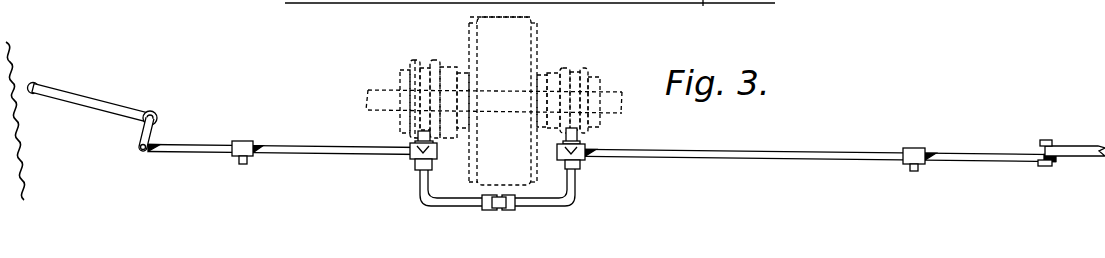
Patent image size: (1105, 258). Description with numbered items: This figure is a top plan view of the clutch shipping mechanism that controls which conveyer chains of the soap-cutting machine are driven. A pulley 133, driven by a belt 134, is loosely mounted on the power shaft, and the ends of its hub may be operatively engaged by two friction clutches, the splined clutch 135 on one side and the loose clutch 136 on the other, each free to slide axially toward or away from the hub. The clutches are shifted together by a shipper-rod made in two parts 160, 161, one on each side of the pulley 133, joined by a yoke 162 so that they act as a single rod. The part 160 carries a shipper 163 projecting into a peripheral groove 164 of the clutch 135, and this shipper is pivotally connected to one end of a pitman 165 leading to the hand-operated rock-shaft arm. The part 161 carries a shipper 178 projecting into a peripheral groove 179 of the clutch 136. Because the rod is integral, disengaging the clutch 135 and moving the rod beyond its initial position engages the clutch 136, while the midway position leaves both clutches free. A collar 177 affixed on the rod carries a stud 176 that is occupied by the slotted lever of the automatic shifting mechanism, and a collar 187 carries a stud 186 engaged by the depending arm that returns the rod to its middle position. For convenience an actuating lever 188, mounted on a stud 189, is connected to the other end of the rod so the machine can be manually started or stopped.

The pulley 133 is at (542, 25).
The belt 134 is at (470, 17).
The friction clutch 135 is at (600, 86).
The friction clutch 136 is at (400, 77).
The shipper-rod part 160 is at (720, 154).
The shipper-rod part 161 is at (315, 152).
The yoke 162 is at (578, 197).
The shipper 163 is at (577, 133).
The peripheral groove 164 is at (576, 67).
The pitman 165 is at (1083, 146).
The stud 176 is at (913, 172).
The collar 177 is at (915, 148).
The shipper 178 is at (421, 154).
The peripheral groove 179 is at (432, 54).
The stud 186 is at (244, 165).
The collar 187 is at (242, 141).
The actuating lever 188 is at (78, 95).
The stud 189 is at (155, 113).